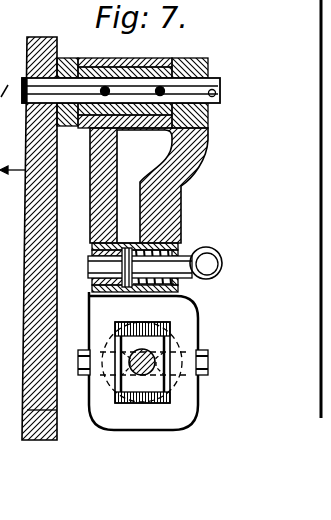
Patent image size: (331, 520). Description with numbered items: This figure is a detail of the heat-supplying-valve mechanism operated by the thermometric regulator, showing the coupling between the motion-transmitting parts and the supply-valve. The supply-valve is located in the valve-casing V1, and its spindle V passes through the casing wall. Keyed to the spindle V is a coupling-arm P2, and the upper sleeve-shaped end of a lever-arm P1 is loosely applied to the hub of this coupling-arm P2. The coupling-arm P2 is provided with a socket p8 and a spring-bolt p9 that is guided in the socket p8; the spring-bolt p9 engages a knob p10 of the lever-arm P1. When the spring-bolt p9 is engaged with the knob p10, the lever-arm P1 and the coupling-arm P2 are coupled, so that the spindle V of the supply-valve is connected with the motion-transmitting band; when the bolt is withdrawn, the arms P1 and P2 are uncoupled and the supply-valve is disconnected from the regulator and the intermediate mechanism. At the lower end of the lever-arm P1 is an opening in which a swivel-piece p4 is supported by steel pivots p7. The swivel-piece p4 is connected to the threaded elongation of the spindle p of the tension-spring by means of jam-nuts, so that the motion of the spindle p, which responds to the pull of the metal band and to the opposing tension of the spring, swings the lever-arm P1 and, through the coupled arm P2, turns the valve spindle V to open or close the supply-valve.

The spindle of the supply-valve V is at (126, 93).
The valve-casing V1 is at (39, 238).
The lever-arm P1 is at (88, 225).
The coupling-arm P2 is at (200, 207).
The spindle p is at (146, 356).
The swivel-piece p4 is at (146, 388).
The steel pivots p7 is at (72, 348).
The socket p8 is at (188, 294).
The spring-bolt p9 is at (208, 256).
The knob p10 is at (93, 289).